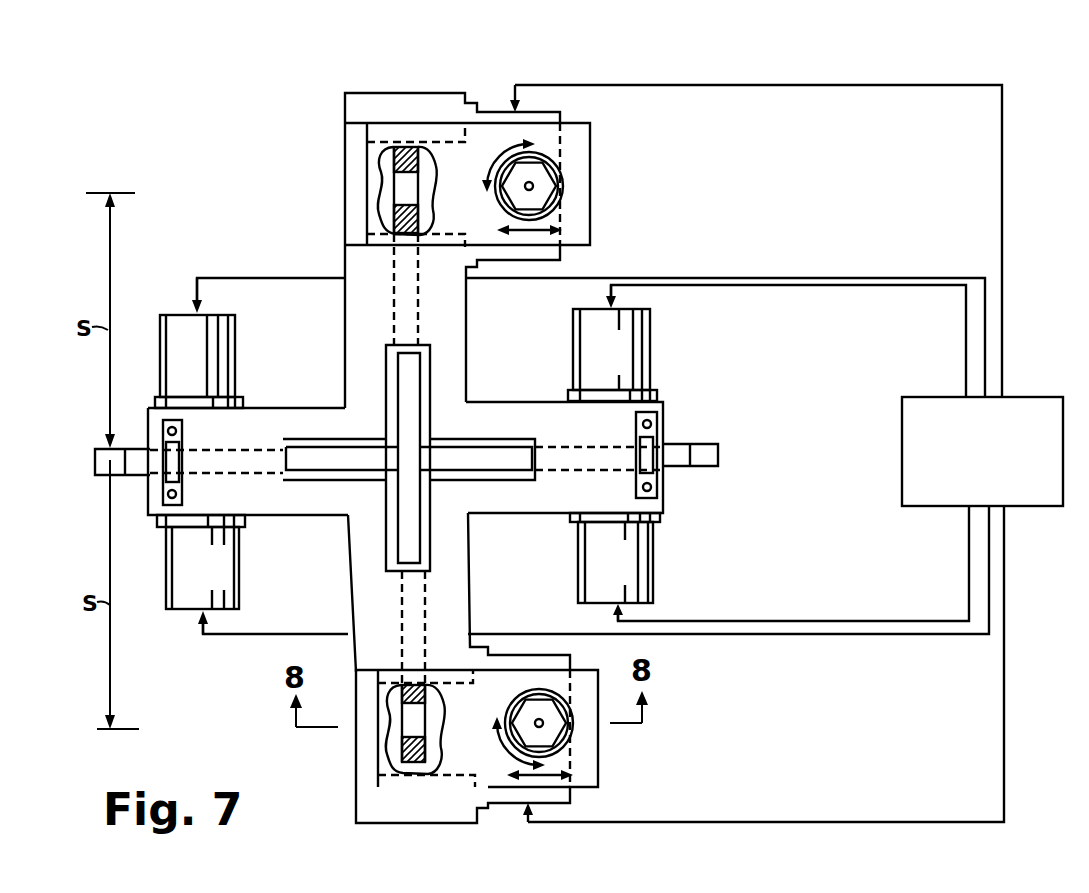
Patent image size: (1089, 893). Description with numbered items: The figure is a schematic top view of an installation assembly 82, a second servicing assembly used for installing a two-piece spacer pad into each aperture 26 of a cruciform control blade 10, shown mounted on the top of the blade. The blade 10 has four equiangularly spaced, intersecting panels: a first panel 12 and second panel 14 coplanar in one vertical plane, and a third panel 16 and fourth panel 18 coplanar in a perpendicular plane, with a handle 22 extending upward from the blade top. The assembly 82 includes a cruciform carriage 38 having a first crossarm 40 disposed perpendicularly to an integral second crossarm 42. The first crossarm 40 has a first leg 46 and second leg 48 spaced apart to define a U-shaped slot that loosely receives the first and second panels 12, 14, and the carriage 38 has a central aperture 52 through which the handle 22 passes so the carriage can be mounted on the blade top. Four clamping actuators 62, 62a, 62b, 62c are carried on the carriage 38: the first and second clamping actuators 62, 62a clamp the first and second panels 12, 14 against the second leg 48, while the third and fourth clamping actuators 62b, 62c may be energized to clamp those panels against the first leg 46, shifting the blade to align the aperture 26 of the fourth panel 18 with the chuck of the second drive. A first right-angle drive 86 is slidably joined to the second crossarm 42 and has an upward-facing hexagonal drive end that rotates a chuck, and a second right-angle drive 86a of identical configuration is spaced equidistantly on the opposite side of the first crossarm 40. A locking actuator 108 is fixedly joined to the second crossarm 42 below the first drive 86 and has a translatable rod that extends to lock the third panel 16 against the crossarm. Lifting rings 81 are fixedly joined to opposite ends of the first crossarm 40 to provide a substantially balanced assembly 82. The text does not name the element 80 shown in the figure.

The cruciform control blade 10 is at (692, 446).
The first panel 12 is at (99, 453).
The second panel 14 is at (720, 452).
The third panel 16 is at (404, 768).
The fourth panel 18 is at (413, 147).
The handle 22 is at (400, 424).
The aperture 26 is at (392, 196).
The cruciform carriage 38 is at (472, 375).
The first crossarm 40 is at (497, 515).
The second crossarm 42 is at (470, 595).
The first leg 46 is at (664, 410).
The second leg 48 is at (664, 492).
The central aperture 52 is at (462, 446).
The first clamping actuator 62 is at (199, 343).
The second clamping actuator 62a is at (612, 343).
The third clamping actuator 62b is at (201, 574).
The fourth clamping actuator 62c is at (615, 567).
The controller 80 is at (982, 451).
The lifting rings 81 is at (184, 468).
The installation assembly 82 is at (713, 68).
The first right-angle drive 86 is at (608, 763).
The second right-angle drive 86a is at (598, 178).
The locking actuator 108 is at (572, 794).